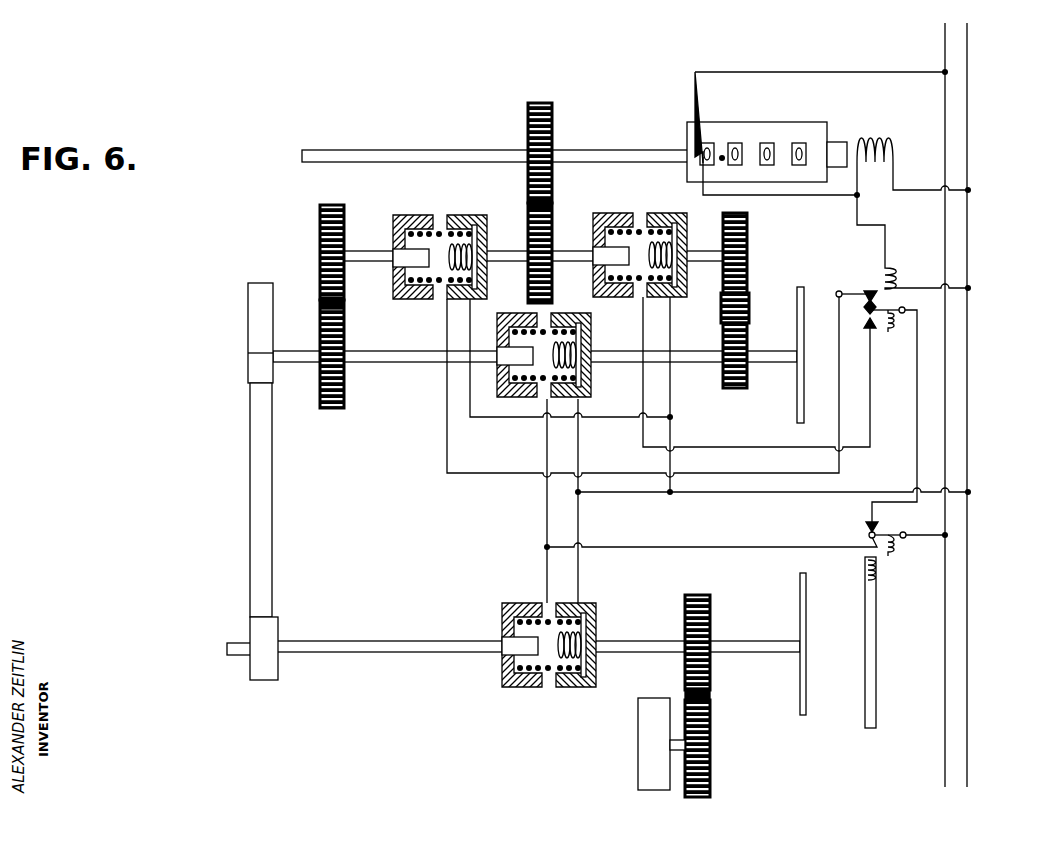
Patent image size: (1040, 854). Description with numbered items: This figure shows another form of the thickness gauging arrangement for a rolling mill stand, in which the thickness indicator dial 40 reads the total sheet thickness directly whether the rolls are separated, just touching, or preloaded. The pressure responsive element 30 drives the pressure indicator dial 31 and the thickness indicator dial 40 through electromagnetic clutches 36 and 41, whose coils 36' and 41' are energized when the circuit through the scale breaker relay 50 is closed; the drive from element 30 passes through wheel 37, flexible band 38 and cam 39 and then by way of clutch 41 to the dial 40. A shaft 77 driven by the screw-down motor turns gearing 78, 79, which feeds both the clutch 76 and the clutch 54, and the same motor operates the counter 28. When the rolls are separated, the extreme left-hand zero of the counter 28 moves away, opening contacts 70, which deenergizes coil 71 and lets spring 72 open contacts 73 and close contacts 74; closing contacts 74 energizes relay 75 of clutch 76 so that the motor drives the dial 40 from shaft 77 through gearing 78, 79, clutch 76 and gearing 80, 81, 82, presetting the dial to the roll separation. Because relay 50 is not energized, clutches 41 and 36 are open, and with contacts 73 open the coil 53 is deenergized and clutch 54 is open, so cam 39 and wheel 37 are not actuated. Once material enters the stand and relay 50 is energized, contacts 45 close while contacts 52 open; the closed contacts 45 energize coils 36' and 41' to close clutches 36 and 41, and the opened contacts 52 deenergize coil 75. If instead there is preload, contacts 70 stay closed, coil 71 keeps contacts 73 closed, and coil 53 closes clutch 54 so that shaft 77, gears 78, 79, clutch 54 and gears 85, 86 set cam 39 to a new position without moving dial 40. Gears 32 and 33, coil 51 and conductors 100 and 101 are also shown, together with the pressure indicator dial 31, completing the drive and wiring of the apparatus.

The counter 28 is at (790, 124).
The pressure responsive element 30 is at (638, 740).
The pressure indicator dial 31 is at (806, 603).
The pinion gear 32 is at (710, 724).
The gear 33 is at (710, 606).
The electromagnetic clutch 36 is at (526, 628).
The clutch coil 36' is at (601, 645).
The wheel 37 is at (250, 627).
The flexible band 38 is at (250, 477).
The cam 39 is at (248, 335).
The thickness indicator dial 40 is at (804, 296).
The electromagnetic clutch 41 is at (513, 368).
The clutch coil 41' is at (592, 355).
The contacts 45 is at (866, 545).
The scale breaker relay 50 is at (880, 573).
The spring 51 is at (890, 550).
The contacts 52 is at (879, 527).
The coil 53 is at (487, 235).
The clutch 54 is at (420, 298).
The contacts 70 is at (700, 152).
The coil 71 is at (888, 271).
The spring 72 is at (891, 327).
The contacts 73 is at (878, 297).
The contacts 74 is at (864, 326).
The relay 75 is at (655, 238).
The electromagnetic clutch 76 is at (612, 213).
The shaft 77 is at (447, 140).
The gearing 78 is at (552, 192).
The gearing 79 is at (552, 230).
The gearing 80 is at (749, 300).
The gearing 81 is at (749, 330).
The gearing 82 is at (747, 250).
The gear 85 is at (320, 244).
The gear 86 is at (344, 392).
The conductor 100 is at (670, 495).
The bus line 101 is at (970, 492).